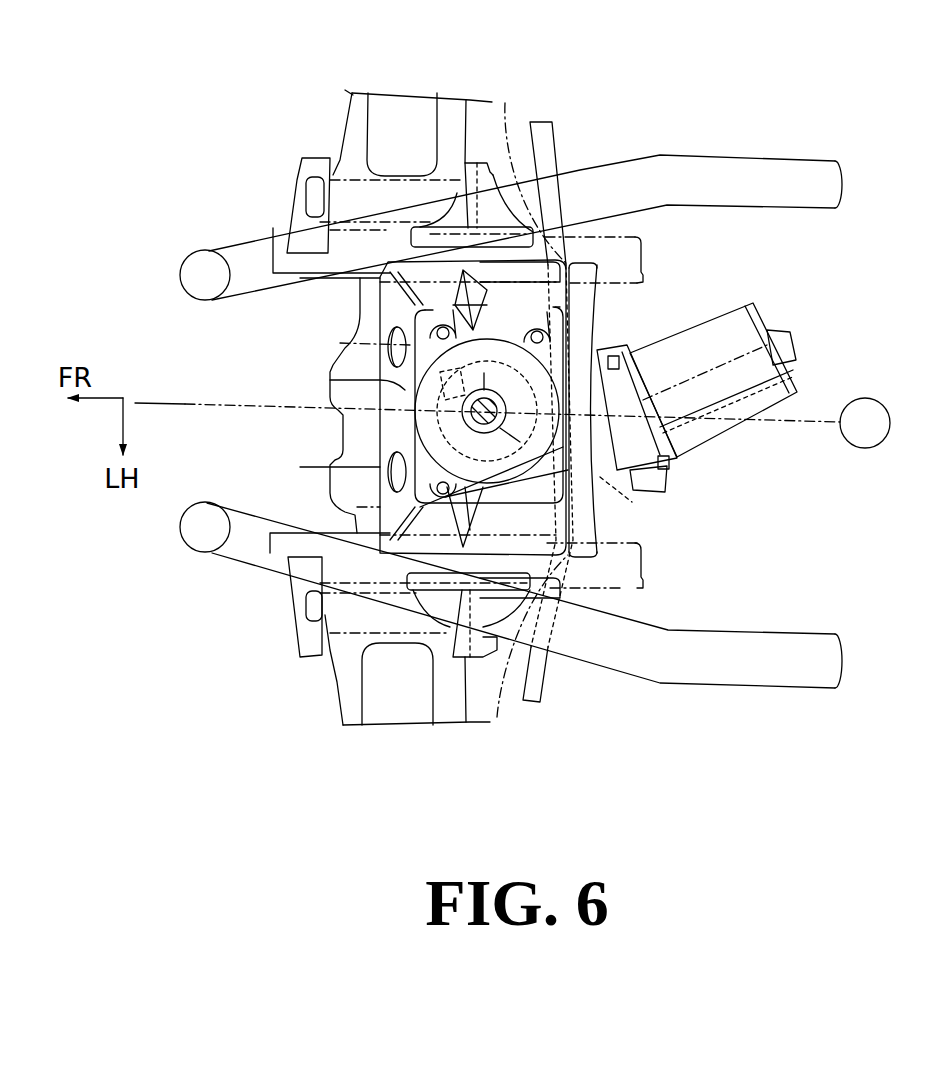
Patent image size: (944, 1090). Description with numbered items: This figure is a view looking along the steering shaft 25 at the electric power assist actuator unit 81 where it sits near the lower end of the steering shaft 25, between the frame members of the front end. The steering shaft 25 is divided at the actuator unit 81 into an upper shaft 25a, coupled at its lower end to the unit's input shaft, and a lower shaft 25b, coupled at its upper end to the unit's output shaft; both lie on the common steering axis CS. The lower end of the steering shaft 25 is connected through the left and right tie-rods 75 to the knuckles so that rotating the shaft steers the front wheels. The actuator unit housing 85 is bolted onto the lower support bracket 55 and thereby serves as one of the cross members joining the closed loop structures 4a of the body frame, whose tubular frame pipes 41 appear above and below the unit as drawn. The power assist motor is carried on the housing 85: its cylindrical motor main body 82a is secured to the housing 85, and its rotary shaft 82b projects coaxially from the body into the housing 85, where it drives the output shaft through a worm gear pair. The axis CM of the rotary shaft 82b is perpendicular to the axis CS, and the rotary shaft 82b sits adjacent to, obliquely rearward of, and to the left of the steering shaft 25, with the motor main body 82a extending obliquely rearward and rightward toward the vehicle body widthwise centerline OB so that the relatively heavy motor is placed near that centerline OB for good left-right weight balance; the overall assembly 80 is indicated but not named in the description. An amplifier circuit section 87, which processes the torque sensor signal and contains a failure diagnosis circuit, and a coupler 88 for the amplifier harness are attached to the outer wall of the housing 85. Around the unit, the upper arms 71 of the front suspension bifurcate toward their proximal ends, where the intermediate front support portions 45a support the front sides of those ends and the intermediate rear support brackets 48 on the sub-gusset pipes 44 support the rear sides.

The closed loop structure 4a is at (758, 136).
The frame pipe 41 is at (685, 150).
The sub-gusset pipe 44 is at (637, 235).
The intermediate front support portion 45a is at (302, 158).
The intermediate rear support bracket 48 is at (505, 103).
The lower support bracket 55 is at (360, 312).
The upper arm 71 is at (346, 124).
The tie-rod 75 is at (553, 142).
The motor unit 80 is at (767, 351).
The actuator unit 81 is at (632, 340).
The motor main body 82a is at (730, 320).
The rotary shaft 82b is at (547, 408).
The housing 85 is at (335, 380).
The amplifier circuit section 87 is at (357, 508).
The coupler 88 is at (359, 343).
The steering shaft 25 is at (208, 412).
The upper shaft 25a is at (335, 467).
The lower shaft 25b is at (400, 415).
The axis of the steering shaft CS is at (410, 432).
The axis of the rotary shaft CM is at (838, 348).
The vehicle body widthwise centerline OB is at (865, 423).